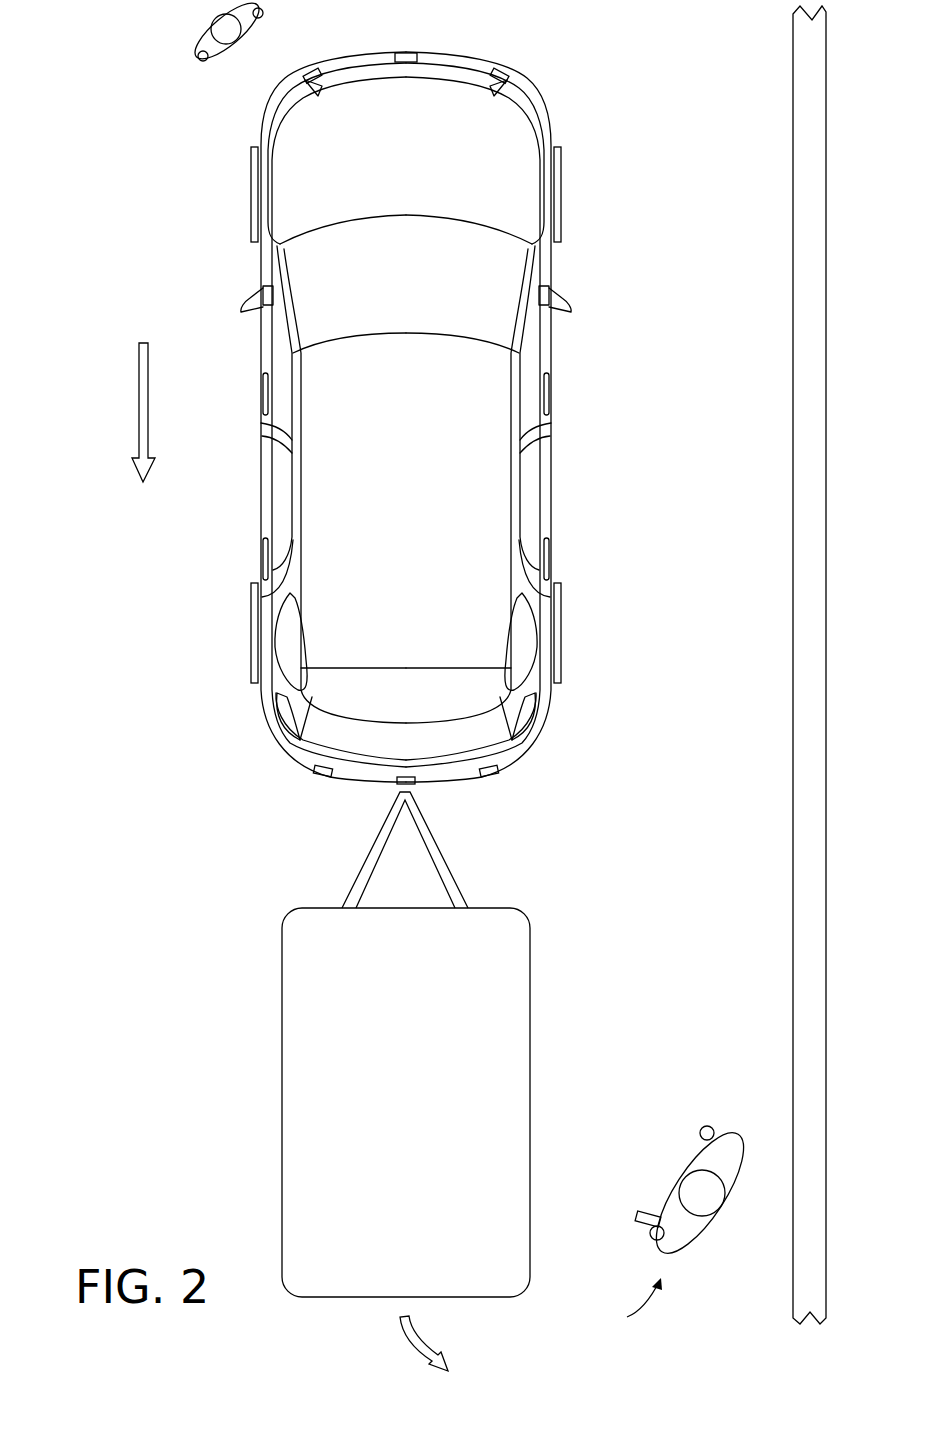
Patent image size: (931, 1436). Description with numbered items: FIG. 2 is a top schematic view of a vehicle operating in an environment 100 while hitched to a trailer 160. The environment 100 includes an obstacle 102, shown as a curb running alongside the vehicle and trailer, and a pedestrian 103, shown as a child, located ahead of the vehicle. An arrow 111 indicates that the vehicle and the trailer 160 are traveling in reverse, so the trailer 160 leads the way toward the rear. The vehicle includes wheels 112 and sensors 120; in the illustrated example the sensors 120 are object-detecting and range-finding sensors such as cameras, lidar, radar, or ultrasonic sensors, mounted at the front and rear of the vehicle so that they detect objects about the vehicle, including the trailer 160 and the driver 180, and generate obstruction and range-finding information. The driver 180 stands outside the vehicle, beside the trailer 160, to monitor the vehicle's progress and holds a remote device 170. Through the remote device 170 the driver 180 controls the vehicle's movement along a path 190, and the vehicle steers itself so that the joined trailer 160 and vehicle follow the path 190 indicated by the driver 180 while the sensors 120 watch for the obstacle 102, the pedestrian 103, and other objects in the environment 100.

The environment 100 is at (103, 80).
The obstacle 102 is at (805, 247).
The pedestrian 103 is at (195, 25).
The arrow 111 is at (139, 402).
The wheels 112 is at (251, 193).
The sensors 120 is at (310, 72).
The trailer 160 is at (250, 1093).
The remote device 170 is at (650, 1233).
The driver 180 is at (624, 1303).
The path 190 is at (402, 1347).